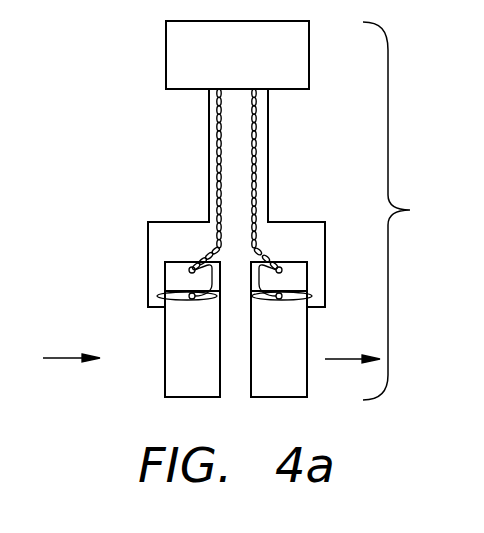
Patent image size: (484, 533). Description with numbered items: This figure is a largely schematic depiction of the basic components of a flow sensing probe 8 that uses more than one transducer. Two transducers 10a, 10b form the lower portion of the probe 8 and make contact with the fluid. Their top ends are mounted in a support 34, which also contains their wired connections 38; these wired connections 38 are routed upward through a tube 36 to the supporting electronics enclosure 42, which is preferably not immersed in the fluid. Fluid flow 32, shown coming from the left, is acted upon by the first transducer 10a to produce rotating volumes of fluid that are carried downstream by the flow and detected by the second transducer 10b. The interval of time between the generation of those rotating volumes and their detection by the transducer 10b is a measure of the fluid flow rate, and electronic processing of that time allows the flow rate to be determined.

The flow sensing probe 8 is at (399, 211).
The transducer 10a is at (188, 397).
The transducer 10b is at (286, 397).
The fluid flow 32 is at (76, 358).
The support 34 is at (148, 241).
The tube 36 is at (208, 148).
The wired connections 38 is at (216, 193).
The supporting electronics enclosure 42 is at (292, 89).